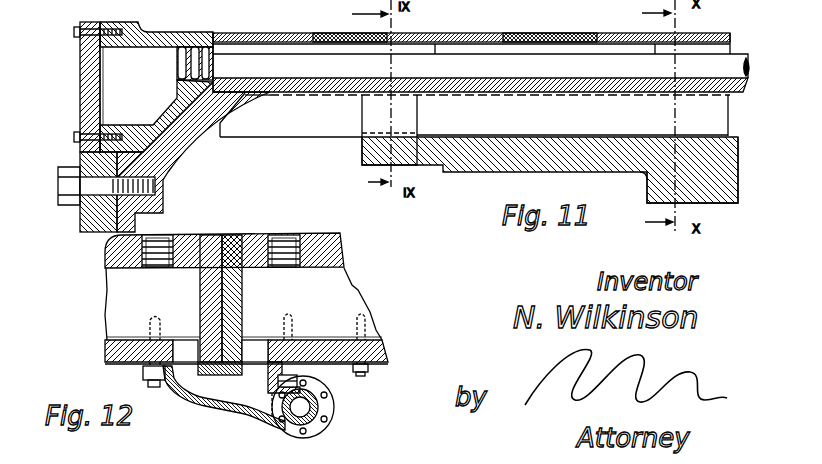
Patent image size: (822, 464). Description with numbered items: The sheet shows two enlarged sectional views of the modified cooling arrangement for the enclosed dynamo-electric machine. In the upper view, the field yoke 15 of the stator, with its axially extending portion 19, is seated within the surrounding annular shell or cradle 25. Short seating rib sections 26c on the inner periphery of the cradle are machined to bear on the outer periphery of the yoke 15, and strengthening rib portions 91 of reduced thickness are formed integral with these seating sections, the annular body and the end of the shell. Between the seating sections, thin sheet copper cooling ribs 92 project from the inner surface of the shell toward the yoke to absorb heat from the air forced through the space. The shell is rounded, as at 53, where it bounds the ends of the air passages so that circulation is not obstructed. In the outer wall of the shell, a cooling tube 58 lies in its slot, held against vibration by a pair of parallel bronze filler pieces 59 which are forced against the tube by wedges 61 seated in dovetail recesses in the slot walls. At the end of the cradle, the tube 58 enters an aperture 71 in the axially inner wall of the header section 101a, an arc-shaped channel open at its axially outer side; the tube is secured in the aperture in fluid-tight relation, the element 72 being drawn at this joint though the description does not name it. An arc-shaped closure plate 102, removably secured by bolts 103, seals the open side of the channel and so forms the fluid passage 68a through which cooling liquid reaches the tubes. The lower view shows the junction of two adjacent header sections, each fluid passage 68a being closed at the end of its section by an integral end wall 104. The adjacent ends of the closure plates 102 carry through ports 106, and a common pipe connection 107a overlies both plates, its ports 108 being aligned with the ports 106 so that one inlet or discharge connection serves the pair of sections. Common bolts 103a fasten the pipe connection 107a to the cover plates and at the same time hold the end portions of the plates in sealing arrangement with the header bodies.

In FIG. 11, the closure plate 102 is at (79, 75).
In FIG. 12, the closure plate 102 is at (118, 366).
In FIG. 11, the bolts 103 is at (74, 32).
In FIG. 12, the bolts 103 is at (367, 369).
In FIG. 11, the header section 101a is at (157, 31).
In FIG. 11, the fluid passage 68a is at (175, 139).
In FIG. 12, the fluid passage 68a is at (108, 303).
In FIG. 11, the threaded stud 72 is at (188, 47).
In FIG. 12, the threaded stud 72 is at (150, 238).
In FIG. 11, the apertures 71 is at (178, 57).
In FIG. 12, the apertures 71 is at (281, 237).
In FIG. 11, the wedges 61 is at (474, 34).
In FIG. 11, the filler pieces 59 is at (540, 44).
In FIG. 11, the annular shell 25 is at (457, 79).
In FIG. 11, the cooling tubes 58 is at (736, 58).
In FIG. 11, the rounded portion 53 is at (244, 95).
In FIG. 11, the strengthening rib portions 91 is at (293, 130).
In FIG. 11, the axially extending portion 19 is at (502, 163).
In FIG. 11, the seating rib sections 26c is at (372, 128).
In FIG. 11, the field yoke 15 is at (655, 180).
In FIG. 11, the cooling ribs 92 is at (727, 123).
In FIG. 12, the end wall 104 is at (203, 290).
In FIG. 12, the ports 106 is at (186, 347).
In FIG. 12, the common bolts 103a is at (152, 318).
In FIG. 12, the ports 108 is at (245, 390).
In FIG. 12, the pipe connection 107a is at (218, 410).